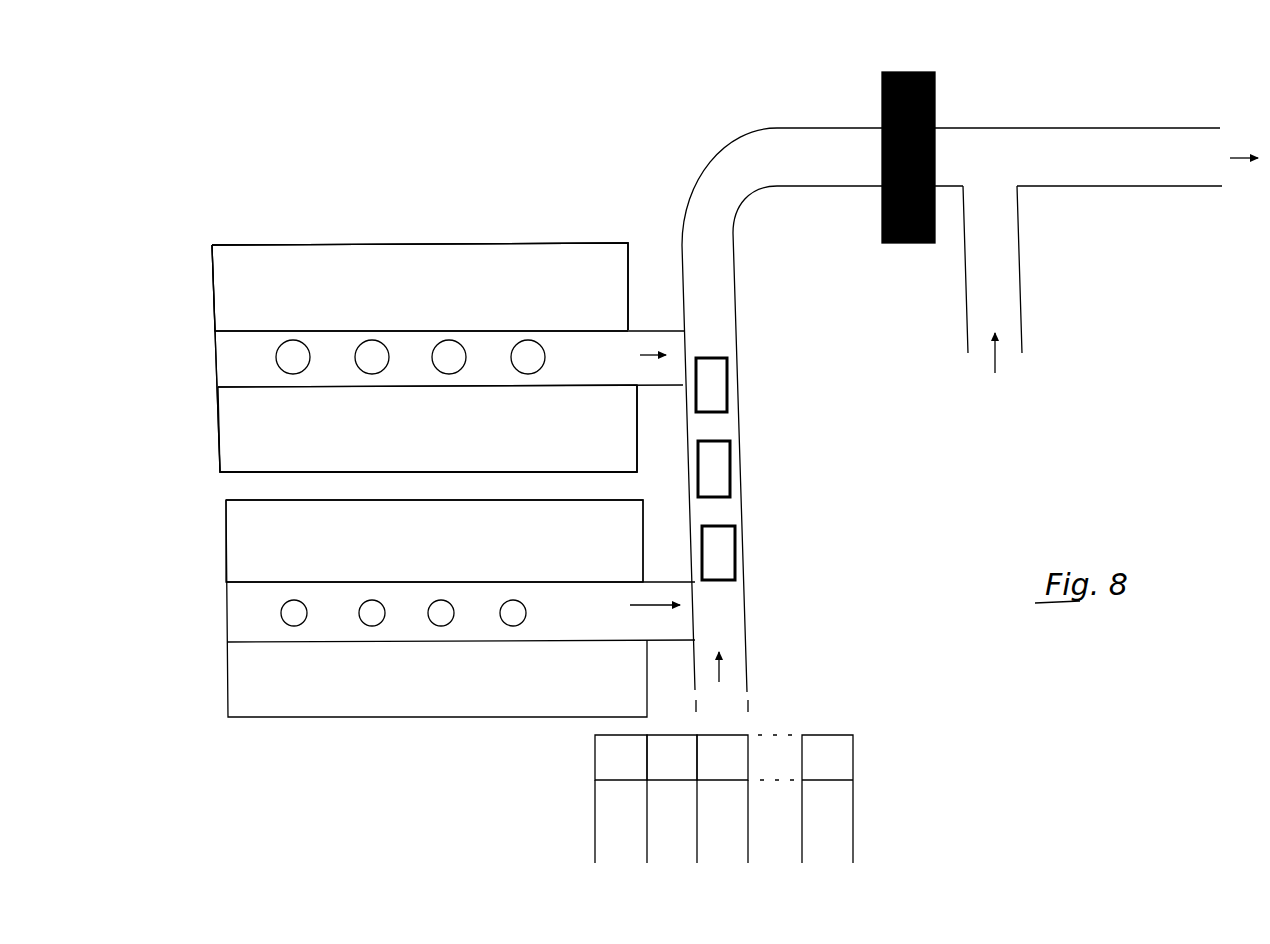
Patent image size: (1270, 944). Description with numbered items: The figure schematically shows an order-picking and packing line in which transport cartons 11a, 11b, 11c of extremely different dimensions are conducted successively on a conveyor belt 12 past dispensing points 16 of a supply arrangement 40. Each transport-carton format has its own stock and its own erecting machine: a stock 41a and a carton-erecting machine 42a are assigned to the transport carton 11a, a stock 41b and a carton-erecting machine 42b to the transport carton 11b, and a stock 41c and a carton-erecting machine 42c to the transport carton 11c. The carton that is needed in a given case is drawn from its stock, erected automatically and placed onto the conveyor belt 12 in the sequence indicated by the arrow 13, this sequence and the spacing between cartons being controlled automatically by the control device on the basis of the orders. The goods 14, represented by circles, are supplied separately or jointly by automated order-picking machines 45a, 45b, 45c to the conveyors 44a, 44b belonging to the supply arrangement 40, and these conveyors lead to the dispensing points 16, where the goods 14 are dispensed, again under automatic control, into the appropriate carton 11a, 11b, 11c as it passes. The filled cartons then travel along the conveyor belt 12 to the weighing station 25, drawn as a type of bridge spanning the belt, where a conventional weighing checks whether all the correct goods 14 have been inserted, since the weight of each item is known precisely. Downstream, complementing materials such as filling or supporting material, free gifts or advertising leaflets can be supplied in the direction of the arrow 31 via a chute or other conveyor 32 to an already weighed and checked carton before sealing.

The supply arrangement 40 is at (165, 353).
The conveyor 44a is at (230, 362).
The conveyor 44b is at (237, 623).
The automated order-picking machine 45a is at (420, 287).
The automated order-picking machine 45b is at (427, 428).
The automated order-picking machine 45c is at (434, 541).
The goods 14 is at (295, 363).
The dispensing point 16 is at (670, 340).
The conveyor belt 12 is at (723, 280).
The weighing station 25 is at (907, 68).
The transport carton 11a is at (728, 390).
The transport carton 11b is at (735, 478).
The transport carton 11c is at (740, 555).
The arrows 13 is at (722, 673).
The chute or conveyor 32 is at (1008, 308).
The arrow 31 is at (995, 362).
The carton-erecting machine 42a is at (621, 757).
The carton-erecting machine 42b is at (672, 757).
The carton-erecting machine 42c is at (722, 757).
The stock 41a is at (621, 822).
The stock 41b is at (676, 824).
The stock 41c is at (728, 822).